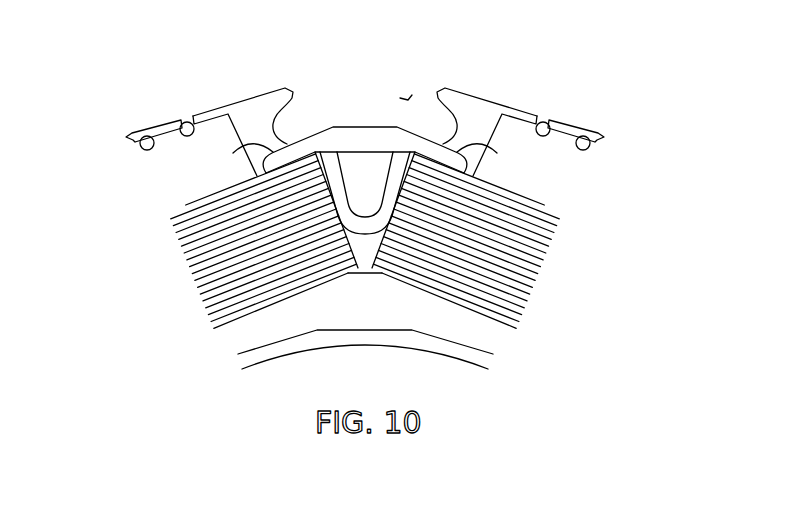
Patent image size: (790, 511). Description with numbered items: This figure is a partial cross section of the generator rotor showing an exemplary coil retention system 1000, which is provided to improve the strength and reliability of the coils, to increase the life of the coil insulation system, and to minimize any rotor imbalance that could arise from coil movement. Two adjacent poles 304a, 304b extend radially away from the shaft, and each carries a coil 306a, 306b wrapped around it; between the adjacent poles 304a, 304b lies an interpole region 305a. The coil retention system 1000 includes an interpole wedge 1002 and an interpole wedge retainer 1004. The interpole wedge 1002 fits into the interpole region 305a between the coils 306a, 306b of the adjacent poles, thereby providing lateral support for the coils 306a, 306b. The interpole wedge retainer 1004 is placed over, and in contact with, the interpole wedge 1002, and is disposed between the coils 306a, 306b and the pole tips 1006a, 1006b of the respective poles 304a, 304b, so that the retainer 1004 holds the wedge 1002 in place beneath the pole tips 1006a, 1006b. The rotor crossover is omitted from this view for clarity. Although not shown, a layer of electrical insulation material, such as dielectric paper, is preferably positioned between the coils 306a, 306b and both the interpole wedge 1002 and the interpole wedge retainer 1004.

The coil retention system 1000 is at (365, 186).
The interpole wedge 1002 is at (368, 232).
The interpole wedge retainer 1004 is at (323, 127).
The pole tip 1006a is at (245, 148).
The pole tip 1006b is at (485, 148).
The pole 304a is at (262, 94).
The pole 304b is at (493, 78).
The interpole region 305a is at (430, 71).
The coil 306a is at (182, 204).
The coil 306b is at (552, 204).